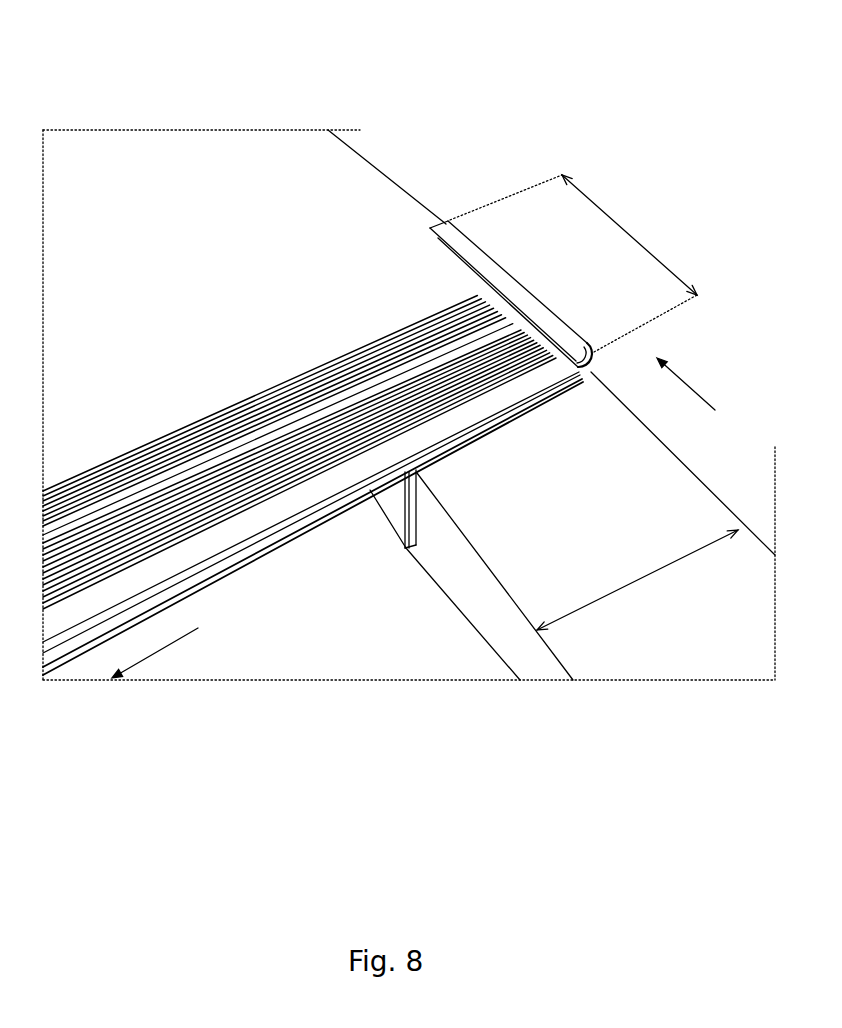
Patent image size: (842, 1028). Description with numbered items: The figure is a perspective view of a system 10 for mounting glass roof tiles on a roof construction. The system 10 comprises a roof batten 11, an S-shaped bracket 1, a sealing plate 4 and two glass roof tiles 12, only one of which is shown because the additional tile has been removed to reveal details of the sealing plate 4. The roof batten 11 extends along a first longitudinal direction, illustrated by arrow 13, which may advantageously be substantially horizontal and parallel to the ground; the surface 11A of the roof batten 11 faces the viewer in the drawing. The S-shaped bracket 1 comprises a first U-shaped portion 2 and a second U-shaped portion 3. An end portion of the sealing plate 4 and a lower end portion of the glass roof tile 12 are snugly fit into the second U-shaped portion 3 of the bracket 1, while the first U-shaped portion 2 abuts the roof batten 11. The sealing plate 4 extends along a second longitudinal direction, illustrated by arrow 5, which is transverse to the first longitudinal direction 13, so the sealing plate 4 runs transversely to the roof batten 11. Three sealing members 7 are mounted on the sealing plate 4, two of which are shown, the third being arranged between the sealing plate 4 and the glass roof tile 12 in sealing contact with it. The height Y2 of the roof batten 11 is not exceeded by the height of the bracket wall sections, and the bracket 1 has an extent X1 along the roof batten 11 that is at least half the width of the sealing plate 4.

The S-shaped bracket 1 is at (470, 255).
The first U-shaped portion 2 is at (417, 552).
The second U-shaped portion 3 is at (594, 370).
The sealing plate 4 is at (277, 525).
The second longitudinal direction 5 is at (175, 643).
The sealing member 7 is at (348, 387).
The system 10 is at (622, 77).
The roof batten 11 is at (615, 485).
The plate surface 11A is at (560, 514).
The glass roof tile 12 is at (375, 222).
The first longitudinal direction 13 is at (690, 385).
The extent of the bracket X1 is at (629, 235).
The height of the roof batten Y2 is at (637, 580).